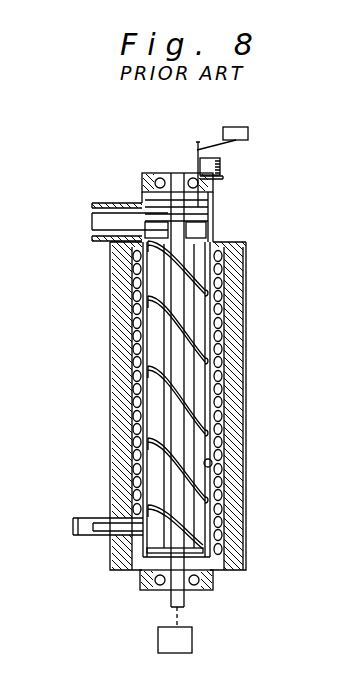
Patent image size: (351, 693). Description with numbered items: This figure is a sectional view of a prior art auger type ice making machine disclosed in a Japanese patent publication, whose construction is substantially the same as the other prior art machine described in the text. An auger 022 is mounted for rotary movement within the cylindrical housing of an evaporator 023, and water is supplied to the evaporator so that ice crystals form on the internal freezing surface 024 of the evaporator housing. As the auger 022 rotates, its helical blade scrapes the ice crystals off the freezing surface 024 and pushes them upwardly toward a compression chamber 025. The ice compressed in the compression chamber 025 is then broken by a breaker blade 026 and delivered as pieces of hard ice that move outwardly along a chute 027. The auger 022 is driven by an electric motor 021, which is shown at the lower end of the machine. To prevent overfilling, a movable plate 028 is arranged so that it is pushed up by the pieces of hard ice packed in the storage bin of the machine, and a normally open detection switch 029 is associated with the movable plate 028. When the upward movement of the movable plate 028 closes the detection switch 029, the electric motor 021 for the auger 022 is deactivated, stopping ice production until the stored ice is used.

The electric motor 021 is at (192, 641).
The auger 022 is at (186, 306).
The evaporator 023 is at (233, 395).
The internal freezing surface 024 is at (215, 467).
The compression chamber 025 is at (204, 226).
The breaker blade 026 is at (133, 232).
The chute 027 is at (100, 218).
The movable plate 028 is at (212, 197).
The detection switch 029 is at (235, 127).